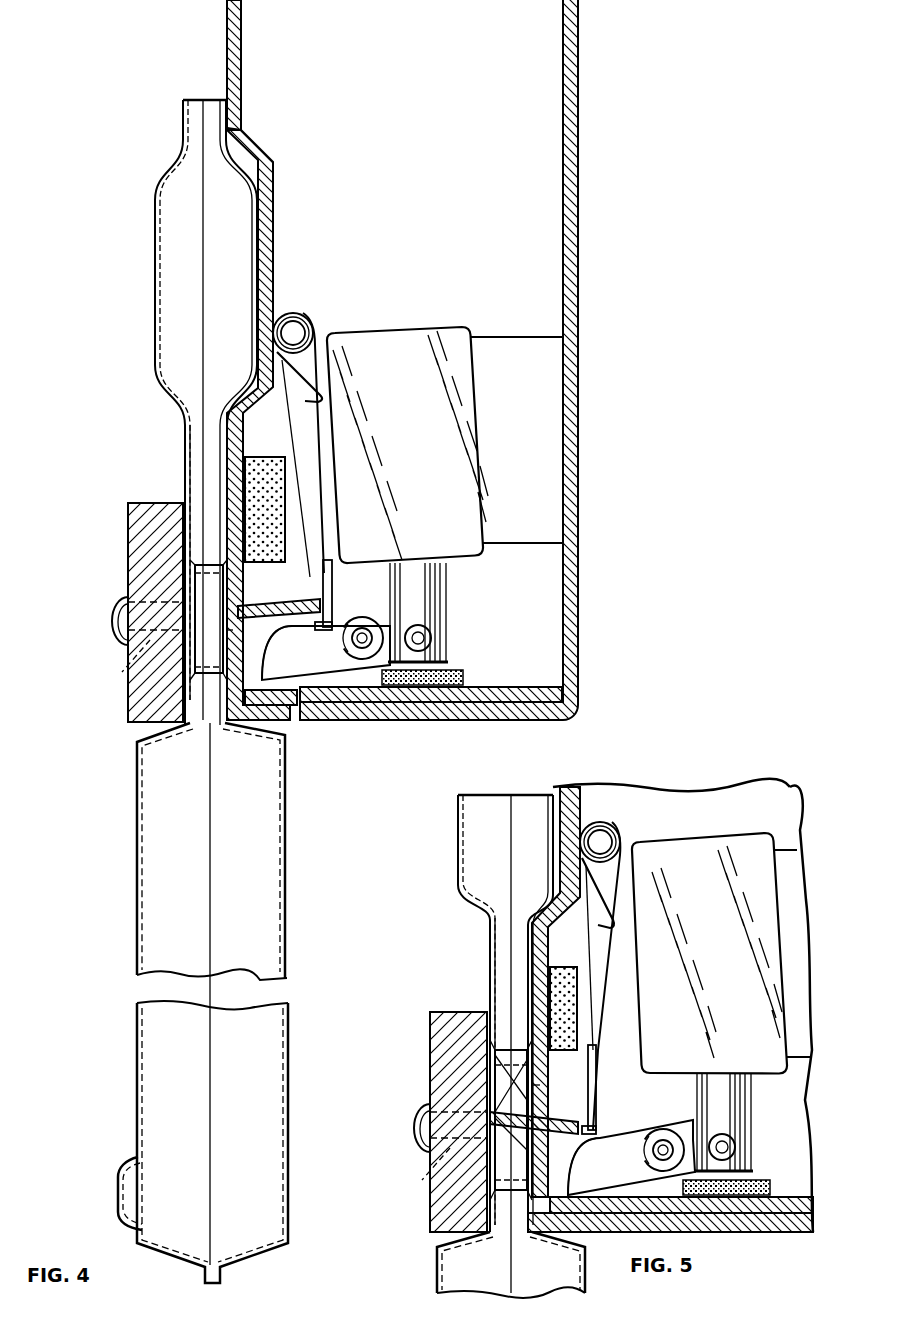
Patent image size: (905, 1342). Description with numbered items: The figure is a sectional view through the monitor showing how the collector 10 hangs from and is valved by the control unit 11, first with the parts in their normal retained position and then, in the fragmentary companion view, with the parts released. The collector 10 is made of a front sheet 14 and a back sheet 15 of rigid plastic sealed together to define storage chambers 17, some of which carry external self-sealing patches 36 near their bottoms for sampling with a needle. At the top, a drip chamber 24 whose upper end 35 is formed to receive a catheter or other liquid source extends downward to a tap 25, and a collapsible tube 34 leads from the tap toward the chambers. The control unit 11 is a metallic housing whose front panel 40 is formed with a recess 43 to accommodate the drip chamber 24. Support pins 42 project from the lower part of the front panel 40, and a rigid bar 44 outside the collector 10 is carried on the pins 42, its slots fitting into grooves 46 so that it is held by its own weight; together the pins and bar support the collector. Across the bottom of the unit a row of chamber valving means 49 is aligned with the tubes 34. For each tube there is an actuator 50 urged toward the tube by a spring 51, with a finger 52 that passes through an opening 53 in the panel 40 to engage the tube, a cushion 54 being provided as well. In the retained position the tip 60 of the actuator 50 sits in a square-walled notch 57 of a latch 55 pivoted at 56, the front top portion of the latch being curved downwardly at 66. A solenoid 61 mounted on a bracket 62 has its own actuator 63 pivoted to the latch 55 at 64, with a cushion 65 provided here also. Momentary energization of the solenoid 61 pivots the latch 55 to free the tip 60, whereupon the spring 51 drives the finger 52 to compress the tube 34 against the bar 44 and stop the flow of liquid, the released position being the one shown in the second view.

In FIG. 4, the collector 10 is at (128, 1040).
In FIG. 4, the control unit 11 is at (583, 273).
In FIG. 4, the front sheet 14 is at (137, 905).
In FIG. 5, the front sheet 14 is at (437, 1278).
In FIG. 4, the back sheet 15 is at (285, 906).
In FIG. 5, the back sheet 15 is at (585, 1280).
In FIG. 4, the storage chambers 17 is at (270, 1198).
In FIG. 4, the drip chamber 24 is at (170, 272).
In FIG. 5, the drip chamber 24 is at (466, 840).
In FIG. 4, the tap 25 is at (200, 462).
In FIG. 5, the tap 25 is at (502, 968).
In FIG. 4, the collapsible tubes 34 is at (218, 629).
In FIG. 5, the collapsible tubes 34 is at (522, 1170).
In FIG. 4, the upper end of drip chamber 35 is at (203, 100).
In FIG. 4, the self-sealing patches 36 is at (118, 1186).
In FIG. 4, the front panel 40 is at (227, 17).
In FIG. 4, the support pins 42 is at (98, 622).
In FIG. 5, the support pins 42 is at (402, 1118).
In FIG. 4, the recess 43 is at (272, 215).
In FIG. 5, the recess 43 is at (582, 790).
In FIG. 4, the bar 44 is at (130, 517).
In FIG. 5, the bar 44 is at (432, 1022).
In FIG. 4, the grooves 46 is at (135, 648).
In FIG. 5, the grooves 46 is at (430, 1165).
In FIG. 4, the chamber valving means 49 is at (428, 318).
In FIG. 5, the chamber valving means 49 is at (695, 833).
In FIG. 4, the actuator 50 is at (315, 345).
In FIG. 5, the actuator 50 is at (620, 855).
In FIG. 4, the spring 51 is at (284, 314).
In FIG. 5, the spring 51 is at (604, 822).
In FIG. 4, the finger 52 is at (290, 605).
In FIG. 5, the finger 52 is at (575, 1133).
In FIG. 4, the opening 53 is at (234, 632).
In FIG. 5, the opening 53 is at (540, 1100).
In FIG. 4, the cushion 54 is at (282, 457).
In FIG. 5, the cushion 54 is at (572, 968).
In FIG. 4, the latch 55 is at (325, 657).
In FIG. 5, the latch 55 is at (628, 1170).
In FIG. 4, the latch pivot 56 is at (365, 630).
In FIG. 5, the latch pivot 56 is at (666, 1142).
In FIG. 4, the notch 57 is at (342, 625).
In FIG. 5, the notch 57 is at (625, 1138).
In FIG. 4, the tip of actuator 60 is at (333, 580).
In FIG. 5, the tip of actuator 60 is at (600, 1092).
In FIG. 4, the solenoid 61 is at (414, 443).
In FIG. 5, the solenoid 61 is at (718, 965).
In FIG. 4, the bracket 62 is at (524, 441).
In FIG. 5, the bracket 62 is at (806, 953).
In FIG. 4, the solenoid actuator 63 is at (443, 589).
In FIG. 5, the solenoid actuator 63 is at (748, 1097).
In FIG. 4, the pivot connection 64 is at (431, 638).
In FIG. 5, the pivot connection 64 is at (735, 1146).
In FIG. 4, the cushion 65 is at (465, 679).
In FIG. 5, the cushion 65 is at (770, 1186).
In FIG. 4, the curved front top portion of latch 66 is at (268, 660).
In FIG. 5, the curved front top portion of latch 66 is at (580, 1178).